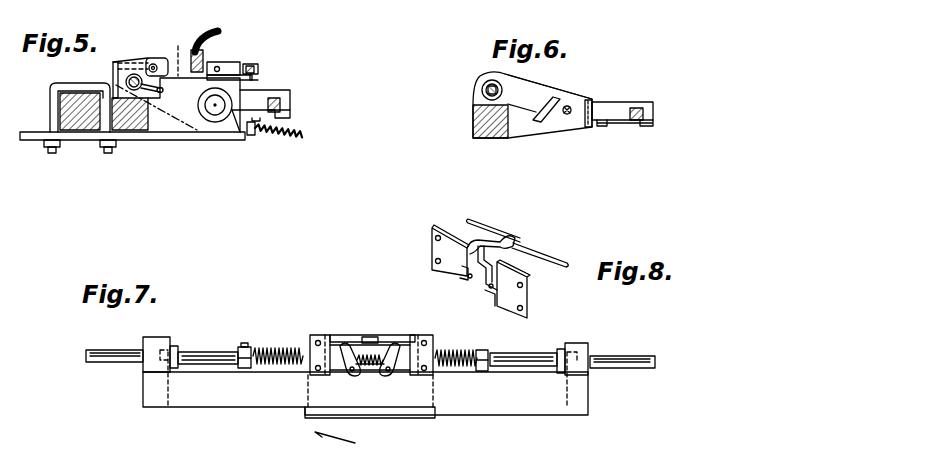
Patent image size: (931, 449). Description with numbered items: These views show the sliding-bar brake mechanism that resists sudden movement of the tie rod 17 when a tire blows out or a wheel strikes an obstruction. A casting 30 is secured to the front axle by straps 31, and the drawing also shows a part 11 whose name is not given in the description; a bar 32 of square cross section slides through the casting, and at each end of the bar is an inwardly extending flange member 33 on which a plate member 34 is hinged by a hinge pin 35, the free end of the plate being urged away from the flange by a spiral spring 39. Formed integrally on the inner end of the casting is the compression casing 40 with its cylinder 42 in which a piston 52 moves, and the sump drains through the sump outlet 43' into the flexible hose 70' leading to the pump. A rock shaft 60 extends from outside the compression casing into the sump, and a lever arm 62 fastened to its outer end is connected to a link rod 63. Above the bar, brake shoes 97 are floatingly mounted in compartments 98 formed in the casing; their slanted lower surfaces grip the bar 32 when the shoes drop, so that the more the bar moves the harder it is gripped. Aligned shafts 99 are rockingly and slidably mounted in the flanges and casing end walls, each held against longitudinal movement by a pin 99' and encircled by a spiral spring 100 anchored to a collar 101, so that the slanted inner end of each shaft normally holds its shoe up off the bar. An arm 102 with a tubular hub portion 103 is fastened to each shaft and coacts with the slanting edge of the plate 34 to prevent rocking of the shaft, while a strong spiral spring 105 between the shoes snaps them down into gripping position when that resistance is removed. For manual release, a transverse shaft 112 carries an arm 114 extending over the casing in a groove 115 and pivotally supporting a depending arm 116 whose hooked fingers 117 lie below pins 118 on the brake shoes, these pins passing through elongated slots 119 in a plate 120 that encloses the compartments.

In FIG. 5, the electromagnet coil 11 is at (62, 108).
In FIG. 5, the tie rod 17 is at (283, 95).
In FIG. 6, the tie rod 17 is at (643, 117).
In FIG. 5, the casting 30 is at (118, 90).
In FIG. 7, the casting 30 is at (305, 414).
In FIG. 5, the straps 31 is at (57, 84).
In FIG. 5, the bar 32 is at (135, 125).
In FIG. 6, the bar 32 is at (473, 120).
In FIG. 7, the bar 32 is at (210, 394).
In FIG. 5, the flange member 33 is at (185, 176).
In FIG. 6, the flange member 33 is at (538, 132).
In FIG. 7, the flange member 33 is at (142, 375).
In FIG. 6, the plate member 34 is at (572, 104).
In FIG. 6, the hinge pin 35 is at (590, 132).
In FIG. 6, the spiral spring 39 is at (593, 105).
In FIG. 5, the compression casing 40 is at (187, 97).
In FIG. 5, the cylinder 42 is at (218, 122).
In FIG. 5, the sump outlet 43' is at (269, 142).
In FIG. 5, the piston 52 is at (213, 115).
In FIG. 5, the rock shaft 60 is at (216, 64).
In FIG. 5, the lever arm 62 is at (234, 70).
In FIG. 5, the link rod 63 is at (258, 73).
In FIG. 5, the flexible hose 70' is at (294, 129).
In FIG. 7, the brake shoes 97 is at (345, 345).
In FIG. 7, the compartments 98 is at (338, 371).
In FIG. 5, the shafts 99 is at (144, 65).
In FIG. 6, the shafts 99 is at (475, 84).
In FIG. 7, the shafts 99 is at (367, 346).
In FIG. 7, the pin 99' is at (374, 340).
In FIG. 7, the spiral spring 100 is at (270, 351).
In FIG. 7, the collar 101 is at (246, 343).
In FIG. 6, the arm 102 is at (522, 96).
In FIG. 7, the arm 102 is at (178, 346).
In FIG. 6, the tubular hub portion 103 is at (480, 91).
In FIG. 7, the tubular hub portion 103 is at (160, 338).
In FIG. 7, the spiral spring 105 is at (378, 369).
In FIG. 5, the transverse shaft 112 is at (156, 54).
In FIG. 8, the transverse shaft 112 is at (538, 252).
In FIG. 8, the arm 114 is at (497, 236).
In FIG. 7, the groove 115 is at (370, 331).
In FIG. 8, the depending arm 116 is at (476, 280).
In FIG. 8, the hooked fingers 117 is at (460, 278).
In FIG. 8, the pins 118 is at (512, 270).
In FIG. 7, the pins 118 is at (360, 371).
In FIG. 8, the elongated slots 119 is at (467, 275).
In FIG. 5, the plate 120 is at (115, 62).
In FIG. 8, the plate 120 is at (438, 229).